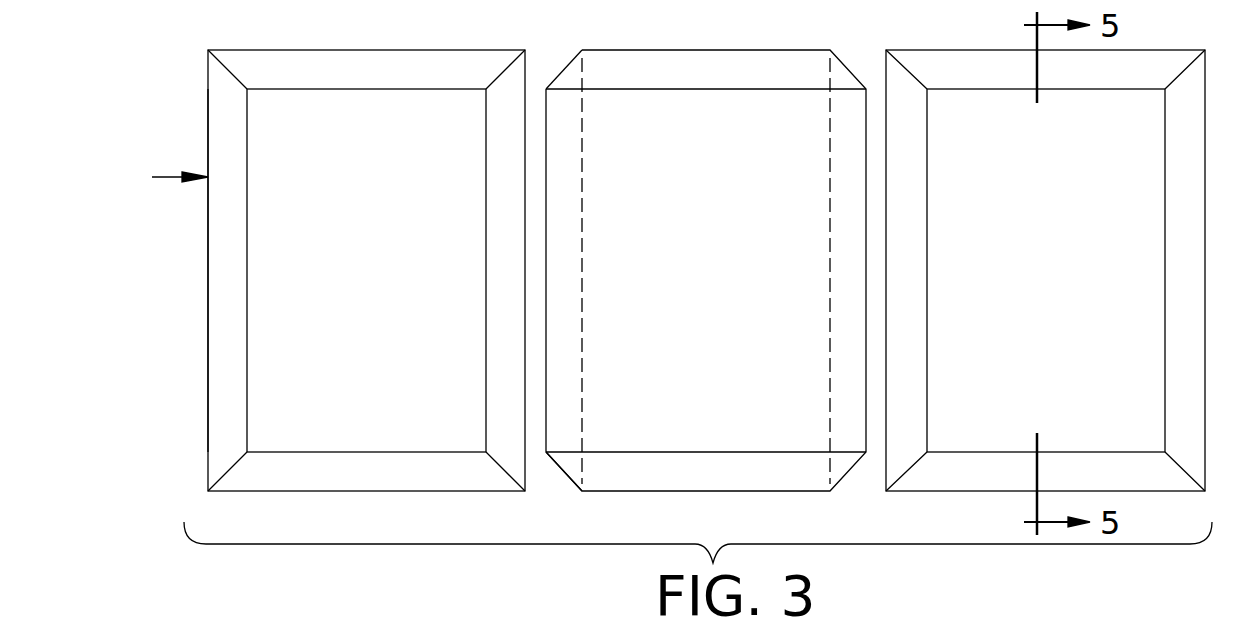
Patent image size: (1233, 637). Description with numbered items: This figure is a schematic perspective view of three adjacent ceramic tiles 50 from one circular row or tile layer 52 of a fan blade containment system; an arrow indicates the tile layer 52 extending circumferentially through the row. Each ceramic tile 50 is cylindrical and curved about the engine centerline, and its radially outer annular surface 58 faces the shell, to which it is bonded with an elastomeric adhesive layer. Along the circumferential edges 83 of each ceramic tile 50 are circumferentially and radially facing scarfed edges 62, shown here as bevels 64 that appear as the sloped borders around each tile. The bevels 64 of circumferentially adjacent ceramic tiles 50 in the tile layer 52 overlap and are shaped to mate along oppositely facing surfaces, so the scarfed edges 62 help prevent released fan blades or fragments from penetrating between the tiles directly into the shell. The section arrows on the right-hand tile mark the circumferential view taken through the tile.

The ceramic tile 50 is at (333, 48).
The tile layer 52 is at (170, 176).
The outer annular surface 58 is at (420, 133).
The scarfed edge 62 is at (230, 340).
The bevel 64 is at (552, 458).
The circumferential edge 83 is at (486, 269).